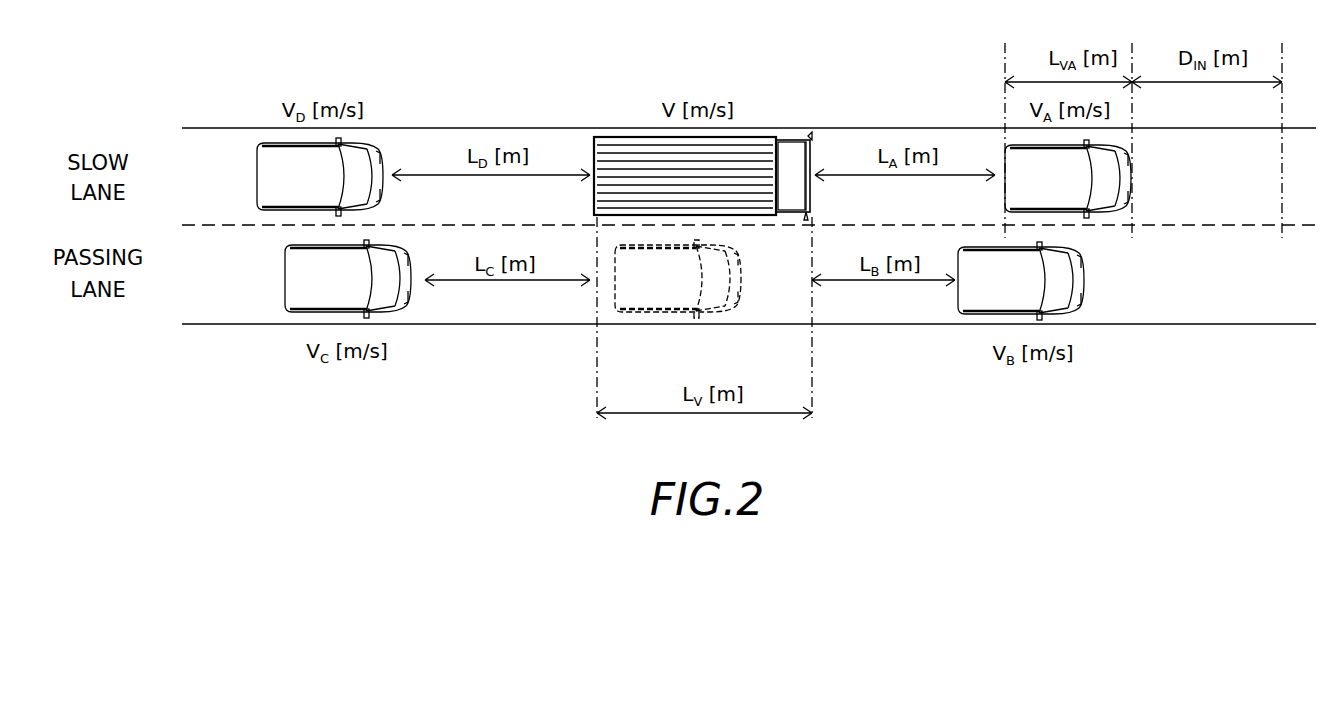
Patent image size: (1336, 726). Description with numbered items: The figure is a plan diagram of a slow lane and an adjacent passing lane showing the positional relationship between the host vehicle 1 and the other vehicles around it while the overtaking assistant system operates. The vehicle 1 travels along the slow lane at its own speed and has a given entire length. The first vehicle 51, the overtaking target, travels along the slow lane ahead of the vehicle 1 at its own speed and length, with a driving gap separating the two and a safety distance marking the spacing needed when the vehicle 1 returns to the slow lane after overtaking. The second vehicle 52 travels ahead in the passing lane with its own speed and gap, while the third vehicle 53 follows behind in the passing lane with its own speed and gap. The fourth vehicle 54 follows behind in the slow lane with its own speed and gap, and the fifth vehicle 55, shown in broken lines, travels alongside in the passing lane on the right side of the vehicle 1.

The vehicle 1 is at (633, 137).
The first vehicle 51 is at (1010, 147).
The second vehicle 52 is at (962, 313).
The third vehicle 53 is at (296, 312).
The fourth vehicle 54 is at (262, 147).
The fifth vehicle 55 is at (645, 313).